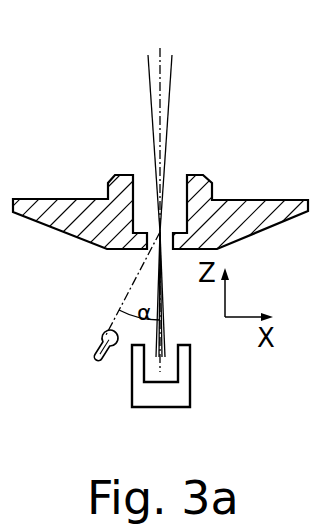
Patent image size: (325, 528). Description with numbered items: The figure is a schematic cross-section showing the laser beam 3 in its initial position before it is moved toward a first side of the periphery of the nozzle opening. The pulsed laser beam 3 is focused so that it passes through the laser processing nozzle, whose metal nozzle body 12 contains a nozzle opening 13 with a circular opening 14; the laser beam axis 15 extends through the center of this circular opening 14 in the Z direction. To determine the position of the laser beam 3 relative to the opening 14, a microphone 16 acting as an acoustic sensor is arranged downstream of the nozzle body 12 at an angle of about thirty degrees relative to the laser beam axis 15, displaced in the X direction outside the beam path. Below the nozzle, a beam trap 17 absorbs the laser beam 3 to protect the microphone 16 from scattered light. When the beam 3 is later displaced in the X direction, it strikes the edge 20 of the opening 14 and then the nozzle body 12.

The pulsed laser beam 3 is at (165, 87).
The nozzle body 12 is at (53, 212).
The nozzle opening 13 is at (177, 181).
The circular opening 14 is at (157, 242).
The laser beam axis 15 is at (158, 52).
The microphone 16 is at (103, 332).
The beam trap 17 is at (147, 393).
The edge 20 is at (157, 213).